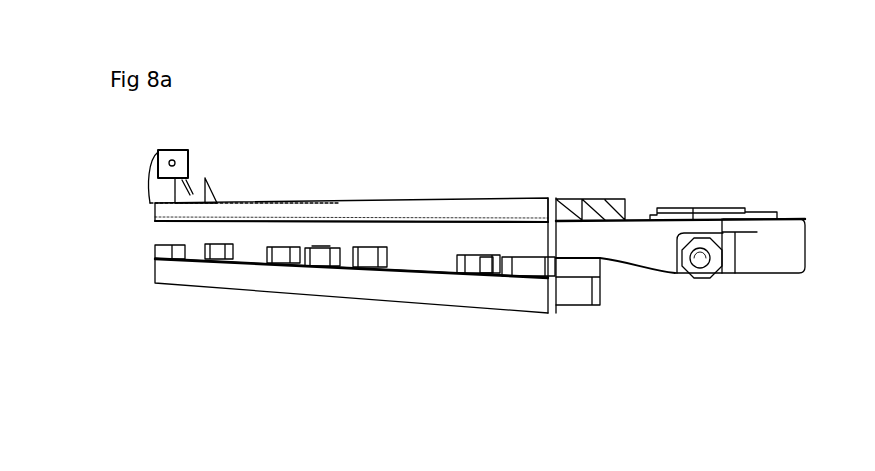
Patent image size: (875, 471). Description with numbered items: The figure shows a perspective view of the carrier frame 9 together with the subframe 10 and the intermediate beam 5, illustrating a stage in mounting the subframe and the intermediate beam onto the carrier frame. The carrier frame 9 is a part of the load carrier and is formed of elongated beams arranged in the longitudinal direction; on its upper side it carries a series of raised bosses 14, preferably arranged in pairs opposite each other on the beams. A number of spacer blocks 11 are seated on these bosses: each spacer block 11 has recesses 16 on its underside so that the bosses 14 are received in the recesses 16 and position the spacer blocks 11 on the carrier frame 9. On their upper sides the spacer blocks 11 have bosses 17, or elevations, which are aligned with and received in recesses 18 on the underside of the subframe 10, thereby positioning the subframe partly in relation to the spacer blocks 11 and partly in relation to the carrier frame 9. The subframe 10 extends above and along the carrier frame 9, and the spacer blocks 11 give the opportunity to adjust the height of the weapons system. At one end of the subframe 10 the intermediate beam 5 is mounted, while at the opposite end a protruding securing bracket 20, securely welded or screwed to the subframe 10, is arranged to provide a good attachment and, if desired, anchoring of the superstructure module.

The intermediate beam 5 is at (780, 233).
The carrier frame 9 is at (200, 273).
The subframe 10 is at (442, 211).
The spacer blocks 11 is at (318, 258).
The raised bosses 14 is at (477, 278).
The recesses 16 is at (475, 266).
The bosses 17 is at (218, 246).
The recesses 18 is at (318, 222).
The protruding securing bracket 20 is at (186, 172).